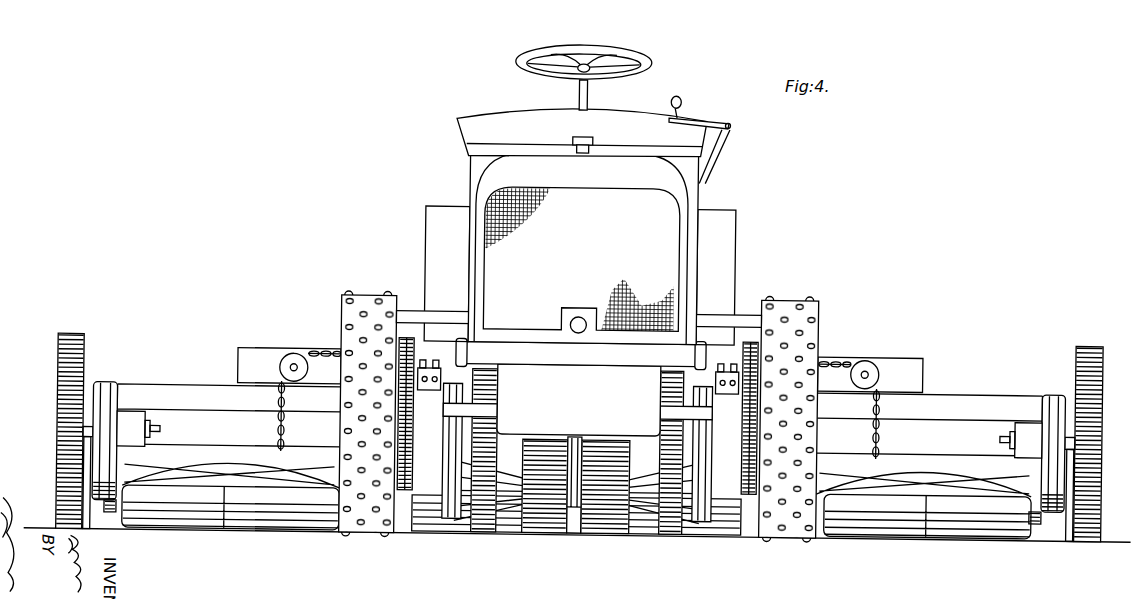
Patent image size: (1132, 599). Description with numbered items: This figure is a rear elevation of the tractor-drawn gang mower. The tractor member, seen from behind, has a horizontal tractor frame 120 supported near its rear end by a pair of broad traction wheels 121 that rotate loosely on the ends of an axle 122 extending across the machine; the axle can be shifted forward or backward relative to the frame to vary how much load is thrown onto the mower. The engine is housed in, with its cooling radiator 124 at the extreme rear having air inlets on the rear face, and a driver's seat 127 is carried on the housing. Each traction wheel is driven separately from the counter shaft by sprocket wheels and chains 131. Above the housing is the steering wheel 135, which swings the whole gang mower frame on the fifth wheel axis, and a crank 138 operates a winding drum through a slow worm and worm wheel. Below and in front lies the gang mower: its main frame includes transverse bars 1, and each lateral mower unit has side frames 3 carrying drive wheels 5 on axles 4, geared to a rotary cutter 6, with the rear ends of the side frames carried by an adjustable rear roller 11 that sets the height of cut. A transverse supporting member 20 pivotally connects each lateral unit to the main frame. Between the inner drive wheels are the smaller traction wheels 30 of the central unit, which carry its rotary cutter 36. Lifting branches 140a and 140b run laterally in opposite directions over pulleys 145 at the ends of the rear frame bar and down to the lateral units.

The transverse bar 1 is at (251, 362).
The side frame 3 is at (112, 404).
The axle 4 is at (85, 432).
The drive wheel 5 is at (57, 407).
The rotary cutter 6 is at (262, 472).
The rear roller 11 is at (195, 534).
The supporting member 20 is at (176, 400).
The traction wheel 30 is at (600, 536).
The rotary cutter 36 is at (503, 517).
The tractor frame 120 is at (543, 362).
The traction wheel 121 is at (363, 289).
The axle 122 is at (485, 412).
The cooling radiator 124 is at (653, 183).
The driver's seat 127 is at (510, 125).
The sprocket wheels and chains 131 is at (407, 339).
The steering wheel 135 is at (595, 49).
The crank 138 is at (698, 114).
The branch 140a is at (842, 357).
The branch 140b is at (318, 352).
The pulley 145 is at (292, 359).